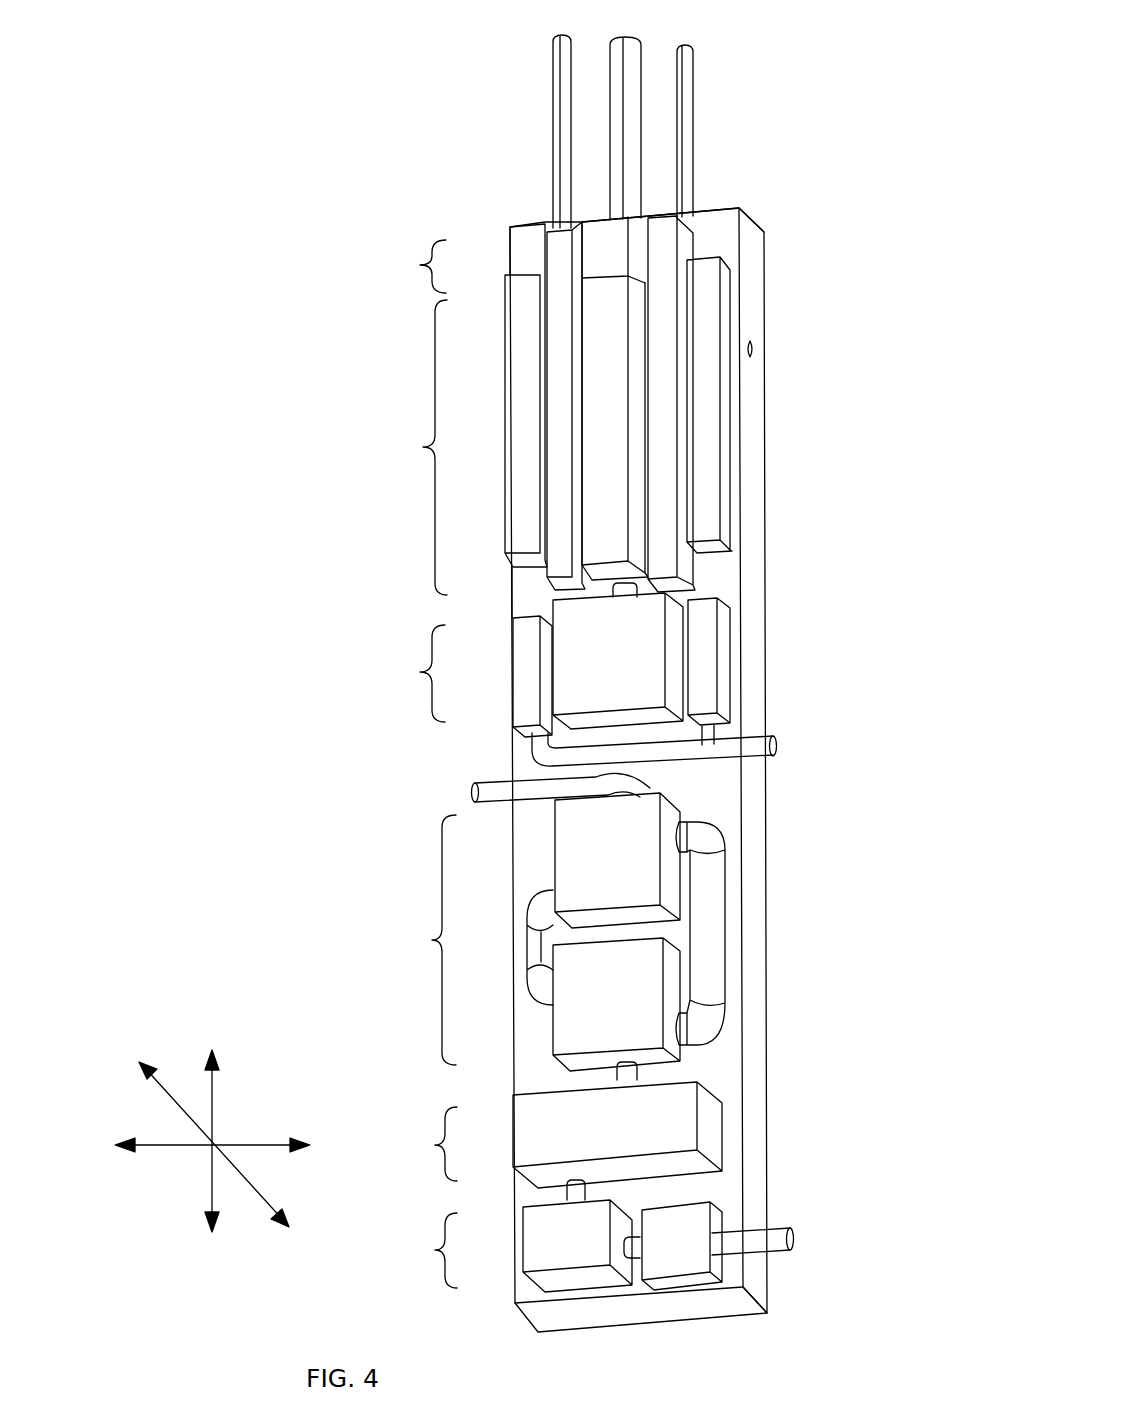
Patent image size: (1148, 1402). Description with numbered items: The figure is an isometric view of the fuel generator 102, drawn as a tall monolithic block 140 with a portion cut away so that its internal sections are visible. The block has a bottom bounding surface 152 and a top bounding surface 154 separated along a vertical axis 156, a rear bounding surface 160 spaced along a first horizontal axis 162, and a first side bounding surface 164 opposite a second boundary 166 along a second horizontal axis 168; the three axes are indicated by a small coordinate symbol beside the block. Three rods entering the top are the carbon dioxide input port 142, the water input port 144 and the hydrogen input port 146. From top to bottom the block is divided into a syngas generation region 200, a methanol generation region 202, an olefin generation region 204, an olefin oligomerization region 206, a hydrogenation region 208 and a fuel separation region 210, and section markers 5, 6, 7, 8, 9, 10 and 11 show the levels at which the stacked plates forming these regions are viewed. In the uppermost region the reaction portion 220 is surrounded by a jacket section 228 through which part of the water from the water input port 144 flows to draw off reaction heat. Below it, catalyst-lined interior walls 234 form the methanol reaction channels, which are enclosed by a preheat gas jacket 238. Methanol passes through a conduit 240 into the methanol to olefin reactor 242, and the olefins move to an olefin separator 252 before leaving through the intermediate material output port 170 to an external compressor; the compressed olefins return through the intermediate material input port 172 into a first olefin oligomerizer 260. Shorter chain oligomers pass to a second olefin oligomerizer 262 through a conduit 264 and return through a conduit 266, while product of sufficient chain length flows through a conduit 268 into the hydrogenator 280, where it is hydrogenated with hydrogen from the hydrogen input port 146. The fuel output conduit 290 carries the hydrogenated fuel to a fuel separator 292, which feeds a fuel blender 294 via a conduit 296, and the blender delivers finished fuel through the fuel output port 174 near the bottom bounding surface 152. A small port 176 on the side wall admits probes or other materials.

The fuel generator 102 is at (288, 153).
The monolithic block 140 is at (515, 240).
The carbon dioxide input port 142 is at (628, 85).
The water input port 144 is at (560, 128).
The hydrogen input port 146 is at (690, 148).
The bottom bounding surface 152 is at (675, 1310).
The top bounding surface 154 is at (758, 216).
The vertical axis 156 is at (213, 1090).
The rear bounding surface 160 is at (765, 983).
The first horizontal axis 162 is at (167, 1095).
The first side bounding surface 164 is at (512, 600).
The second boundary 166 is at (752, 493).
The second horizontal axis 168 is at (165, 1147).
The intermediate material output port 170 is at (777, 750).
The intermediate material input port 172 is at (485, 793).
The fuel output port 174 is at (793, 1241).
The port 176 is at (756, 349).
The syngas generation region 200 is at (420, 265).
The methanol generation region 202 is at (423, 447).
The olefin generation region 204 is at (420, 672).
The olefin oligomerization region 206 is at (432, 940).
The hydrogenation region 208 is at (435, 1145).
The fuel separation region 210 is at (435, 1250).
The reaction portion 220 is at (603, 247).
The jacket section 228 is at (552, 245).
The interior walls 234 is at (618, 508).
The preheat gas jacket 238 is at (703, 523).
The conduit 240 is at (627, 590).
The methanol to olefin reactor 242 is at (588, 663).
The olefin separator 252 is at (520, 682).
The first olefin oligomerizer 260 is at (588, 863).
The second olefin oligomerizer 262 is at (588, 1008).
The conduit 264 is at (710, 858).
The conduit 266 is at (542, 937).
The conduit 268 is at (627, 1080).
The hydrogenator 280 is at (587, 1148).
The fuel output conduit 290 is at (577, 1192).
The fuel separator 292 is at (543, 1252).
The fuel blender 294 is at (655, 1252).
The conduit 296 is at (633, 1262).
The section line 5- 5 is at (387, 265).
The section line 6- 6 is at (385, 410).
The section line 7- 7 is at (405, 615).
The section line 8- 8 is at (418, 697).
The section line 9- 9 is at (400, 921).
The section line 10- 10 is at (412, 1145).
The section line 11- 11 is at (428, 1268).